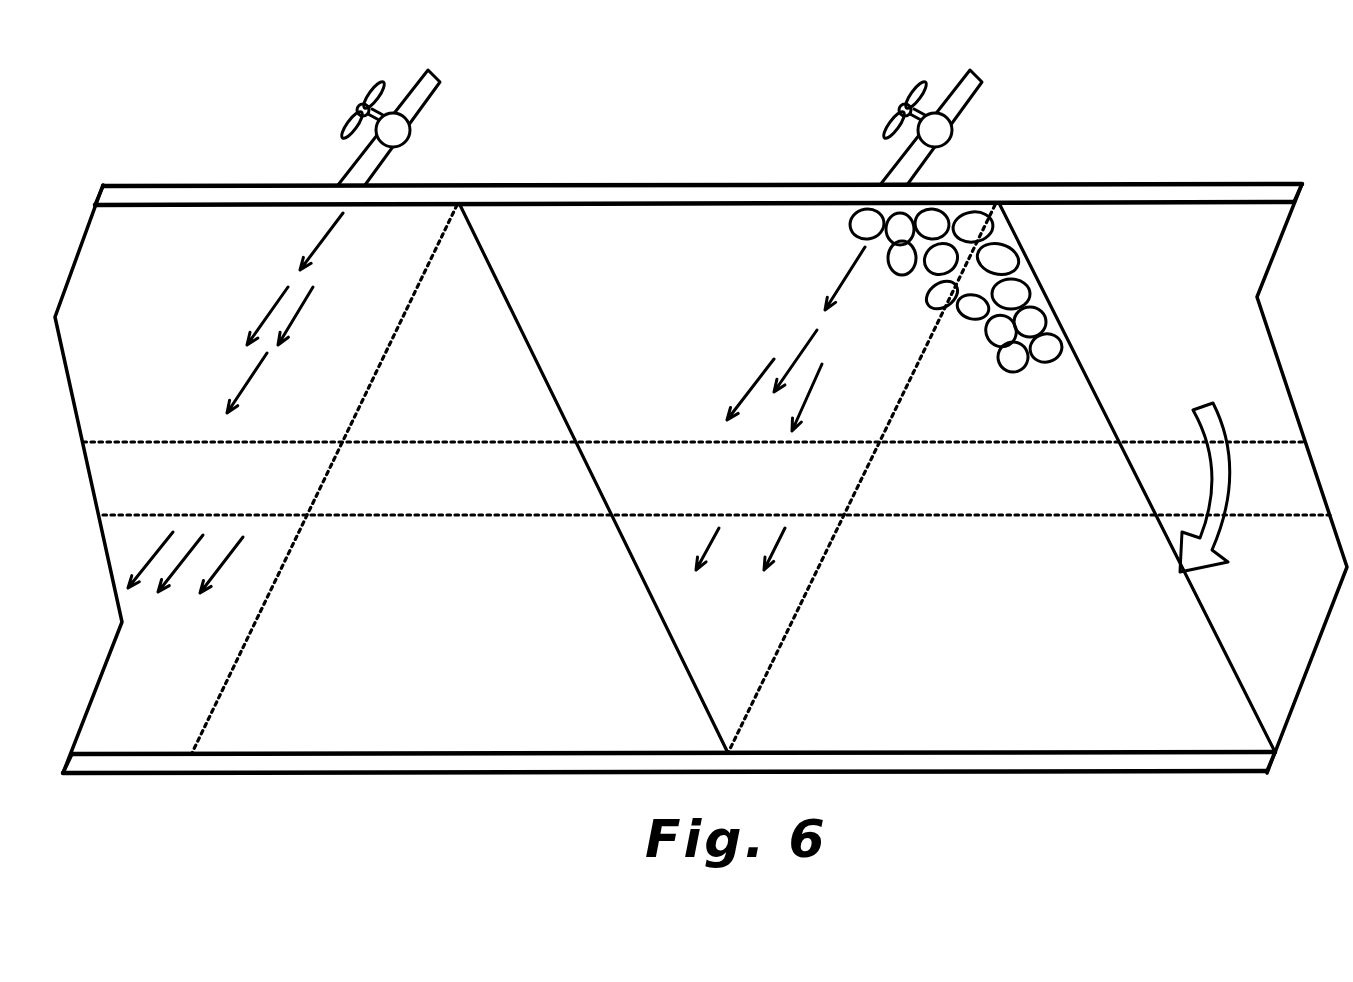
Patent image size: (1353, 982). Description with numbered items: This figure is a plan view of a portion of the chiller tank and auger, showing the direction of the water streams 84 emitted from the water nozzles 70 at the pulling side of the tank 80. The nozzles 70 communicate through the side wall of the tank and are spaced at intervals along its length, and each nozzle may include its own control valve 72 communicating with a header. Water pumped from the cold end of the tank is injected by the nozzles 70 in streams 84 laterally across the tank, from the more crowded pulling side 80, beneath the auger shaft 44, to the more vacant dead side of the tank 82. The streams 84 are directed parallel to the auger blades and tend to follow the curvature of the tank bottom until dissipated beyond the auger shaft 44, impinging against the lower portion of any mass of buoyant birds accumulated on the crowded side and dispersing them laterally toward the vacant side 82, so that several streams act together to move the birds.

The auger shaft 44 is at (633, 460).
The water nozzle 70 is at (352, 163).
The control valve 72 is at (412, 133).
The pulling side of the tank 80 is at (598, 265).
The dead side of the tank 82 is at (138, 688).
The water stream 84 is at (277, 300).